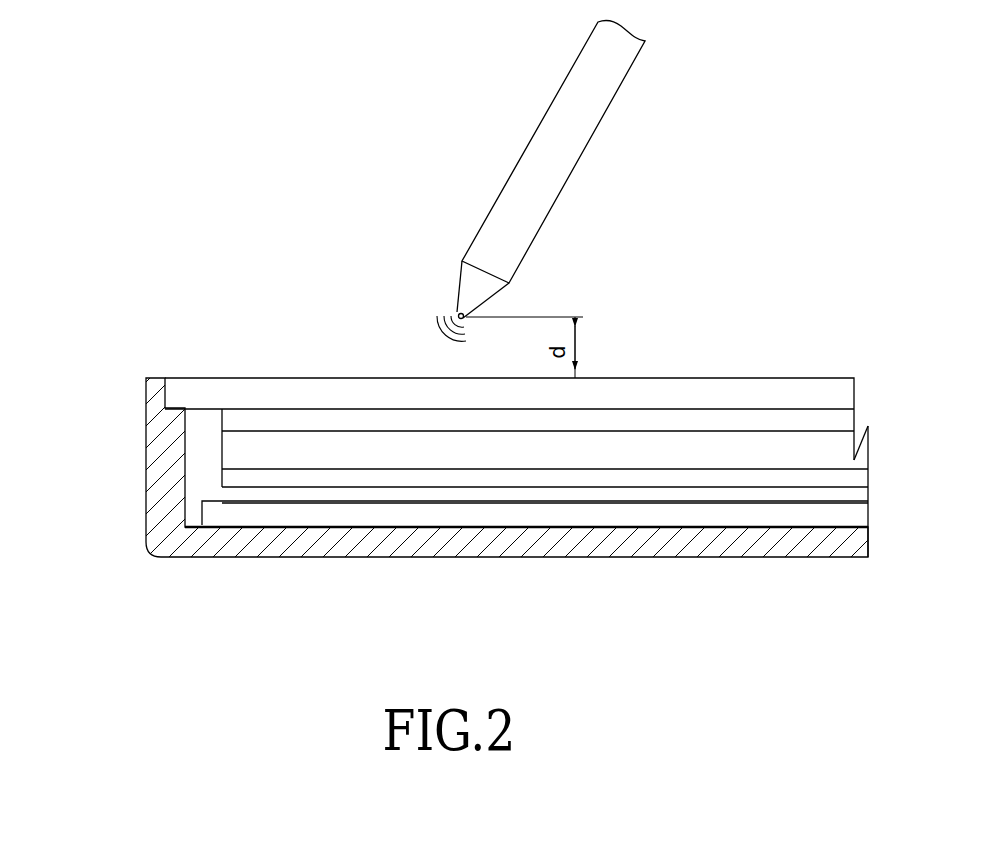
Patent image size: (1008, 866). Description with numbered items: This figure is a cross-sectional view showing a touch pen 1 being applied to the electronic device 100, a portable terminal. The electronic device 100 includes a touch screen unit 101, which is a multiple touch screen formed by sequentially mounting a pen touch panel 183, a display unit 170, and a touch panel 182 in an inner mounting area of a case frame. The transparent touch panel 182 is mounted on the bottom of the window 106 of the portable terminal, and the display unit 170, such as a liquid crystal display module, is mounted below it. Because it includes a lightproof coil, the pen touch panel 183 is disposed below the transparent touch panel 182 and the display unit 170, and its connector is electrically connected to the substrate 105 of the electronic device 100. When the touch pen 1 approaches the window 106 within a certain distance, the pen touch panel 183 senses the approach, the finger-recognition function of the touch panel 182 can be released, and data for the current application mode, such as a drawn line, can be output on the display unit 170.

The touch pen 1 is at (527, 136).
The electronic device 100 is at (745, 318).
The window 106 is at (233, 379).
The touch screen unit 101 is at (451, 451).
The touch panel 182 is at (224, 421).
The display unit 170 is at (224, 452).
The pen touch panel 183 is at (224, 479).
The substrate 105 is at (210, 501).